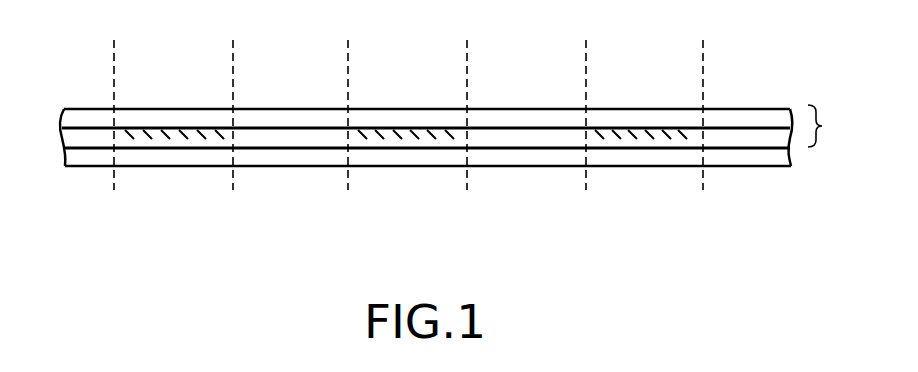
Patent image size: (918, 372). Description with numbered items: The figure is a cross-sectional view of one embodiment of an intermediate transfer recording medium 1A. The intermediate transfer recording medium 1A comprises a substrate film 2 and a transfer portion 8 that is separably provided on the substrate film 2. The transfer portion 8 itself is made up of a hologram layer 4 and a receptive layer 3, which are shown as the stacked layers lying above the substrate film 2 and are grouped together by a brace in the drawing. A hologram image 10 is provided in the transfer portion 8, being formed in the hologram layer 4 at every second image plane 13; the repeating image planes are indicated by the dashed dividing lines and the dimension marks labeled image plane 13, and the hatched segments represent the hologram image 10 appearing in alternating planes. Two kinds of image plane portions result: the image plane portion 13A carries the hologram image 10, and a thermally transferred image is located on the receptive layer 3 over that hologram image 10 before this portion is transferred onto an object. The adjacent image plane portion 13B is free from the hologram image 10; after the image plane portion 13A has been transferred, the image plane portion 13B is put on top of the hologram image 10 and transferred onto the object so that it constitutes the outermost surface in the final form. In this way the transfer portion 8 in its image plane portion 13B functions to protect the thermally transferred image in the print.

The intermediate transfer recording medium 1A is at (404, 97).
The substrate film 2 is at (723, 152).
The receptive layer 3 is at (724, 119).
The hologram layer 4 is at (763, 137).
The transfer portion 8 is at (826, 126).
The hologram image 10 is at (160, 136).
The image plane 13 is at (702, 59).
The image plane portion 13A is at (114, 188).
The image plane portion 13B is at (233, 188).